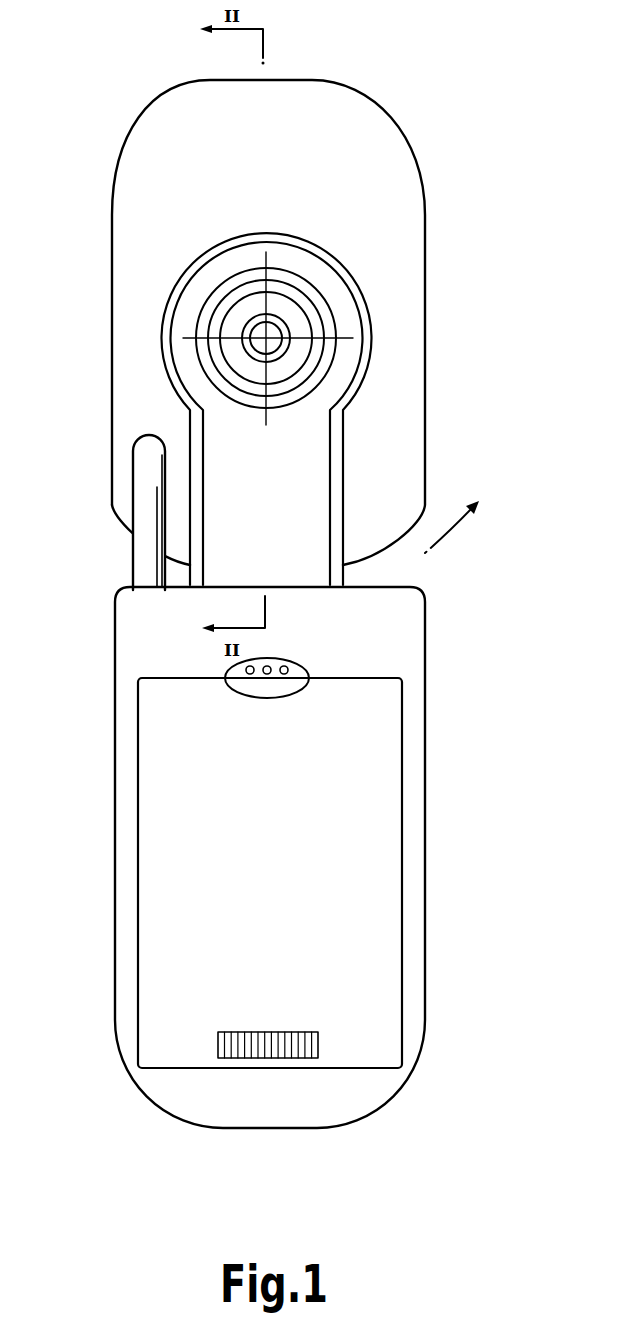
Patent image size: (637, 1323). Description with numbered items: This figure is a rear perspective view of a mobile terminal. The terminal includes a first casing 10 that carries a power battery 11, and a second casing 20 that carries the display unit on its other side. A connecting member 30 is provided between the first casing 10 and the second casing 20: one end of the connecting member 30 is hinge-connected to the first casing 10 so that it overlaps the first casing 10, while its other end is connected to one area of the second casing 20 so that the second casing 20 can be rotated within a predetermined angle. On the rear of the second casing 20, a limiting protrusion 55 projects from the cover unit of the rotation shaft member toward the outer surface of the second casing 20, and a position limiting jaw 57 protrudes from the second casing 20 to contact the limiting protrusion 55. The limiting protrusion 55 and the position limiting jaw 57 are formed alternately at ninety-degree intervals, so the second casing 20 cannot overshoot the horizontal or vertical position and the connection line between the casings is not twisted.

The first casing 10 is at (422, 805).
The power battery 11 is at (385, 904).
The second casing 20 is at (425, 205).
The connecting member 30 is at (362, 498).
The limiting protrusion 55 is at (267, 377).
The position limiting jaw 57 is at (236, 322).